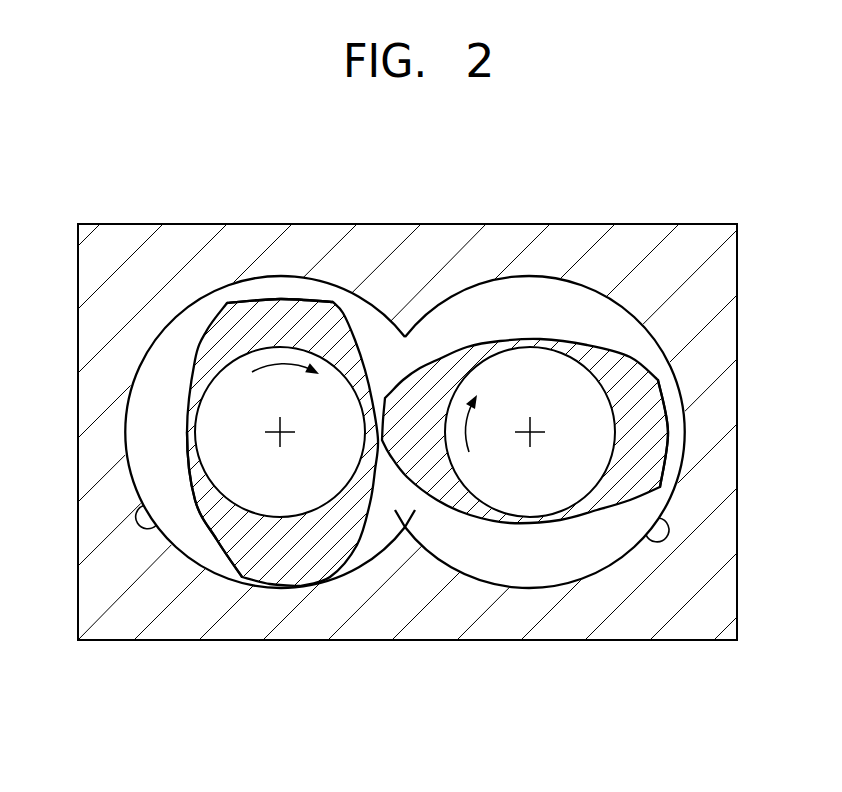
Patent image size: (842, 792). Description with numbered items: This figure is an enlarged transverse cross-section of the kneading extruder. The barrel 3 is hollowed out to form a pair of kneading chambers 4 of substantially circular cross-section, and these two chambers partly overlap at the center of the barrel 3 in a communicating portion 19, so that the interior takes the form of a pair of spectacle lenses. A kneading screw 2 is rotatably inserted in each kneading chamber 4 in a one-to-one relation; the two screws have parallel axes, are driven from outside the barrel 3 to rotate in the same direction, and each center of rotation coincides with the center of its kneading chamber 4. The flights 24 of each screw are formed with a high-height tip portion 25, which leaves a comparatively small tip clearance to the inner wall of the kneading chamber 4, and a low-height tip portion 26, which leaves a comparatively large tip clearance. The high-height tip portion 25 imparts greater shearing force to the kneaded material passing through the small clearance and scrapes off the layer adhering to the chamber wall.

The kneading screw 2 is at (208, 335).
The barrel 3 is at (695, 224).
The kneading chamber 4 is at (142, 506).
The communicating portion 19 is at (396, 540).
The flight 24 is at (277, 530).
The high-height tip portion 25 is at (374, 445).
The low-height tip portion 26 is at (278, 296).